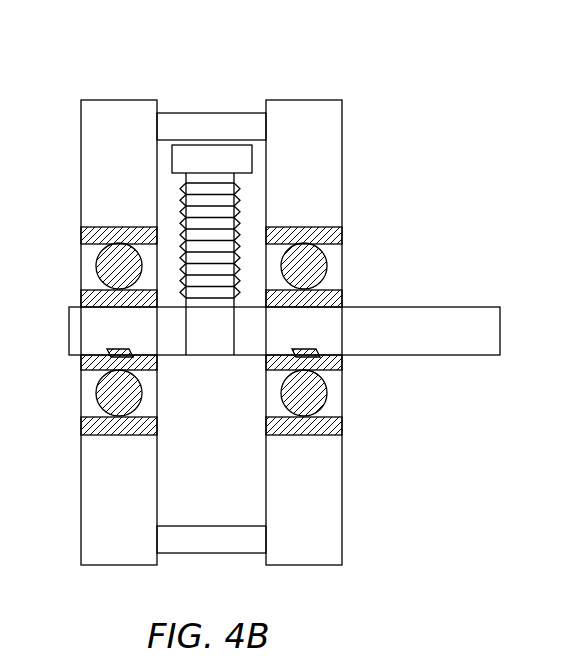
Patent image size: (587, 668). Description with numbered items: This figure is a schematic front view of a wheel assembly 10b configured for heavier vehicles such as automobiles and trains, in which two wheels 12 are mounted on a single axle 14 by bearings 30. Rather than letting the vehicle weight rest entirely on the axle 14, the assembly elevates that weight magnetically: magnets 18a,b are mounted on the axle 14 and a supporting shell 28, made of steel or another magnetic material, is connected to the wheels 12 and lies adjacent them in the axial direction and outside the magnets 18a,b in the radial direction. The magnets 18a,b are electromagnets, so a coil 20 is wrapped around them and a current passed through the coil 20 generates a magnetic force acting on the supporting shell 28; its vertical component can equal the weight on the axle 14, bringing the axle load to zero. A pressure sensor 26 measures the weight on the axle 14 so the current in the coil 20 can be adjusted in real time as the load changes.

The wheel assembly 10b is at (265, 54).
The wheel 12 is at (118, 100).
The axle 14 is at (463, 307).
The magnets 18a,b is at (252, 162).
The coil 20 is at (240, 207).
The pressure sensor 26 is at (115, 351).
The supporting shell 28 is at (206, 113).
The bearing 30 is at (82, 240).